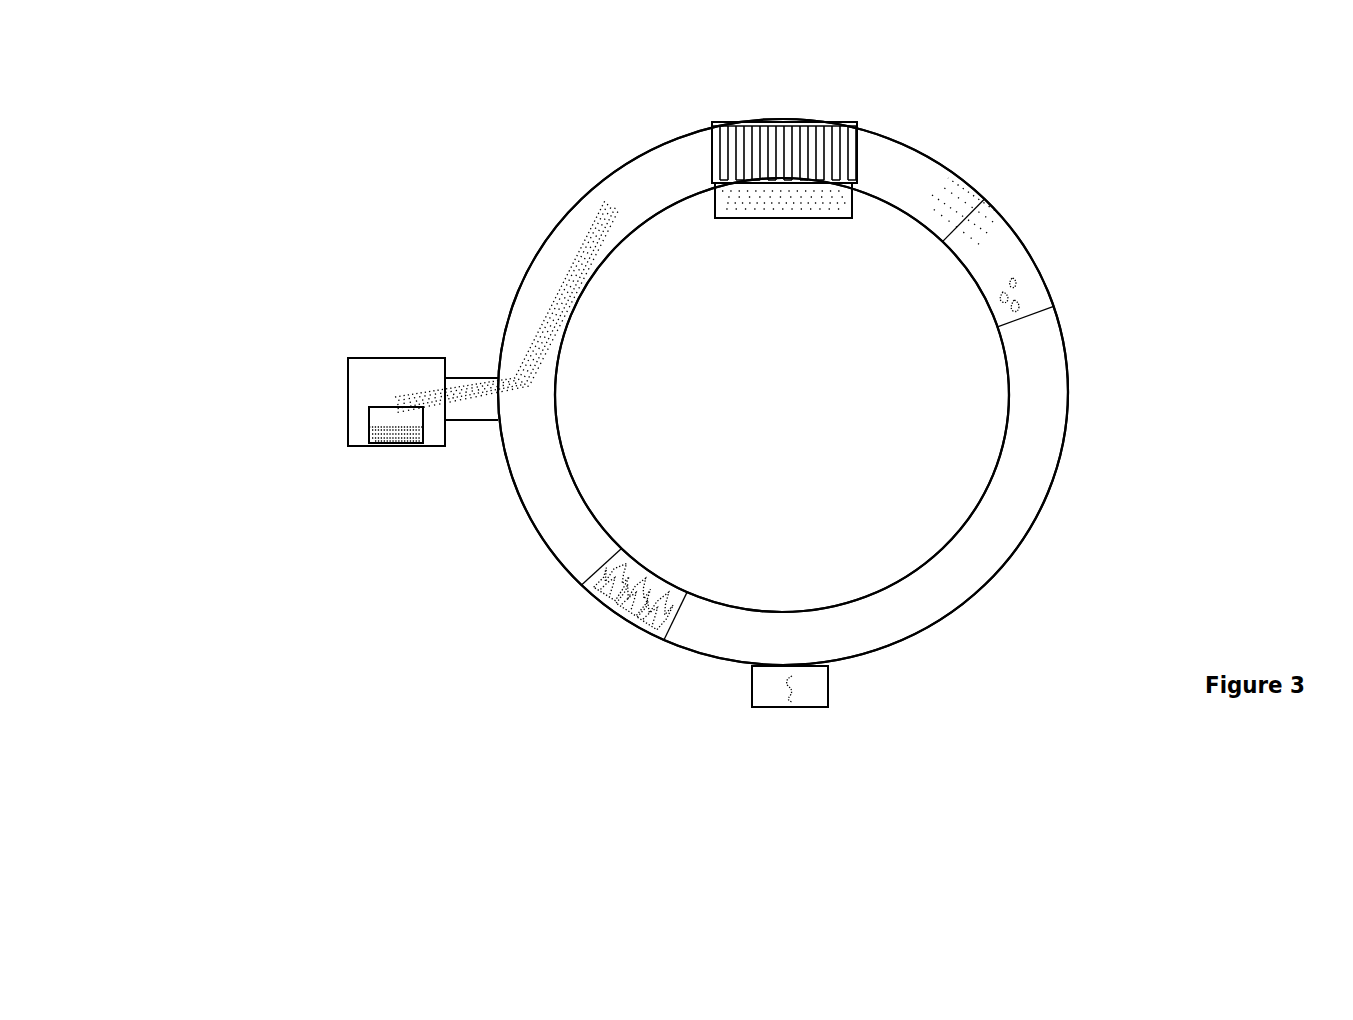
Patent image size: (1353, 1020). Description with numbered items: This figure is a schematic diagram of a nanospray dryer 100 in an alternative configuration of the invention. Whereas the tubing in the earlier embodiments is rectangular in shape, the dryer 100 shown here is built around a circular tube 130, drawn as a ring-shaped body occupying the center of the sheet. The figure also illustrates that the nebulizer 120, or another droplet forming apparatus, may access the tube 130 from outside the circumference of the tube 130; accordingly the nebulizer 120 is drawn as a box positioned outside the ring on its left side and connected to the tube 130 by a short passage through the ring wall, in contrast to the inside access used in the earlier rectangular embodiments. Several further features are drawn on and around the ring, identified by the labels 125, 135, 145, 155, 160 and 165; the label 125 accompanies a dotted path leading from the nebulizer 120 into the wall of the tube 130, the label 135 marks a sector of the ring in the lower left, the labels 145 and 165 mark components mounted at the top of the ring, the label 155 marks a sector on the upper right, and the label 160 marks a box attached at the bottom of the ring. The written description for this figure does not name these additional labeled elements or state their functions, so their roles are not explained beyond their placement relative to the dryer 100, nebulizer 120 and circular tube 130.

The dryer 100 is at (488, 217).
The nebulizer 120 is at (346, 388).
The fuel flow path 125 is at (548, 289).
The circular tube 130 is at (522, 520).
The combustion chamber 135 is at (628, 634).
The heat sink 145 is at (775, 118).
The condenser 155 is at (1030, 252).
The power unit 160 is at (790, 710).
The thermoelectric generator 165 is at (782, 222).